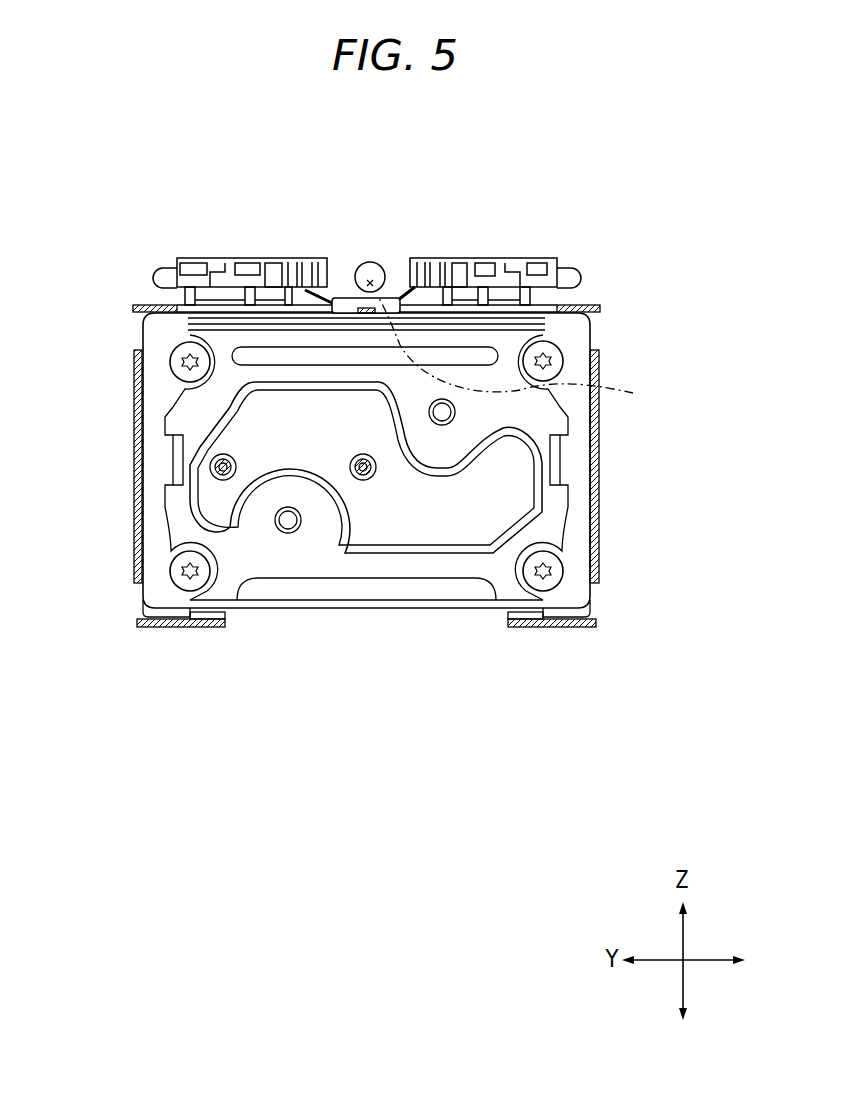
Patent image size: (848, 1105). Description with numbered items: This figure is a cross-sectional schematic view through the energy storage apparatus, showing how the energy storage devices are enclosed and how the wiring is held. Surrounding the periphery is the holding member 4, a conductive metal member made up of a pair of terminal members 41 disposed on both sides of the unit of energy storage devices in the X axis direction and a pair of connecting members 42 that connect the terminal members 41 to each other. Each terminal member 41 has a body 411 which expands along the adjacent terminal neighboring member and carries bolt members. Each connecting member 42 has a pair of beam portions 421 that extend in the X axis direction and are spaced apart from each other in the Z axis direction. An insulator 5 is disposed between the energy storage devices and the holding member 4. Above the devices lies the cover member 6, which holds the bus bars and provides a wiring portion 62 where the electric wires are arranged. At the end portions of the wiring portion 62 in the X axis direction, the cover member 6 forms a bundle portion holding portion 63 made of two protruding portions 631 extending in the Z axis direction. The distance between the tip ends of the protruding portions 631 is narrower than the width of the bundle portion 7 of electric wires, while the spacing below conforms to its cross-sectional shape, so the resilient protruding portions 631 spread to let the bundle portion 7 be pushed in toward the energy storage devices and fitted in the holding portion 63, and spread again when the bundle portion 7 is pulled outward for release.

The holding member 4 is at (138, 332).
The insulator 5 is at (583, 298).
The cover member 6 is at (213, 255).
The bundle portion 7 is at (515, 352).
The terminal member 41 is at (395, 680).
The body 411 is at (398, 520).
The connecting member 42 is at (157, 458).
The beam portion 421 is at (363, 479).
The wiring portion 62 is at (398, 293).
The bundle portion holding portion 63 is at (318, 167).
The protruding portion 631 is at (346, 290).